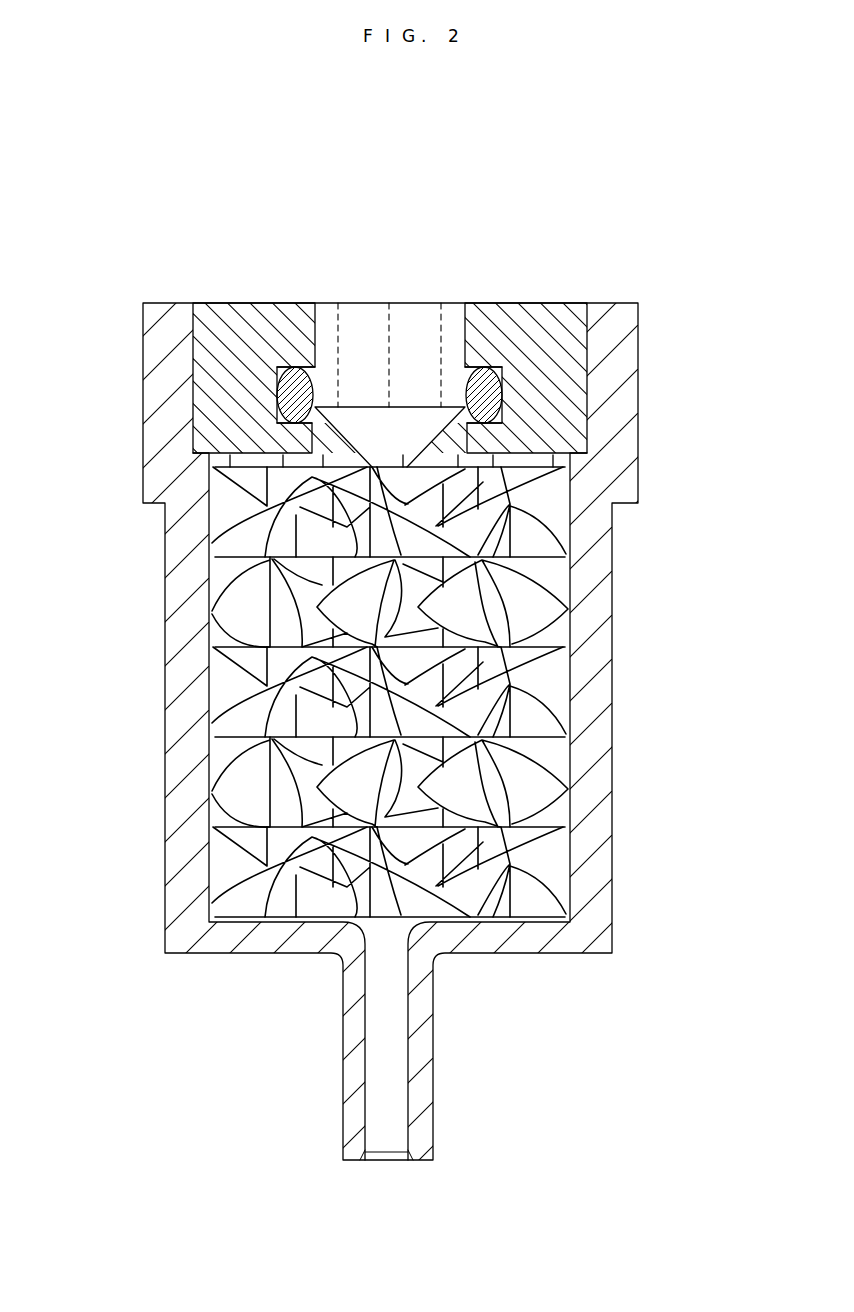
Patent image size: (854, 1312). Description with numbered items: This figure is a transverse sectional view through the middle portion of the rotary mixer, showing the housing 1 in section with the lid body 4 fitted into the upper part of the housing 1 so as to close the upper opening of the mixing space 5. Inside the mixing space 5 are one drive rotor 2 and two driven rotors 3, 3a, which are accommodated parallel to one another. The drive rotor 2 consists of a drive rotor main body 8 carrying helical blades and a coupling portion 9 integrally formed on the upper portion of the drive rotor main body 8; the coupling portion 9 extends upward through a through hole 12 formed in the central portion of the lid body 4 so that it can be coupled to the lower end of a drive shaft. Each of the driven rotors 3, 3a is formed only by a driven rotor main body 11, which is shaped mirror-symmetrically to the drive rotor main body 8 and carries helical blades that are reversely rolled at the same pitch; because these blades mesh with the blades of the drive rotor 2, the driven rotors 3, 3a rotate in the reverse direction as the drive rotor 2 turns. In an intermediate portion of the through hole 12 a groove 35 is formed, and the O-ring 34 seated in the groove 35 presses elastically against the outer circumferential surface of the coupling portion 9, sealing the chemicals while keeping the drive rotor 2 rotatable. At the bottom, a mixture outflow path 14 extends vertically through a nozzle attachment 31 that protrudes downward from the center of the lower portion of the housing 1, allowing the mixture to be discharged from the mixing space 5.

The housing 1 is at (598, 791).
The drive rotor 2 is at (399, 686).
The driven rotor 3 is at (324, 791).
The driven rotor 3a is at (492, 703).
The lid body 4 is at (540, 320).
The mixing space 5 is at (235, 750).
The drive rotor main body 8 is at (385, 611).
The coupling portion 9 is at (360, 348).
The driven rotor main body 11 is at (500, 745).
The through hole 12 is at (467, 367).
The mixture outflow path 14 is at (393, 1107).
The nozzle attachment 31 is at (340, 1092).
The O-ring 34 is at (297, 380).
The groove 35 is at (277, 375).